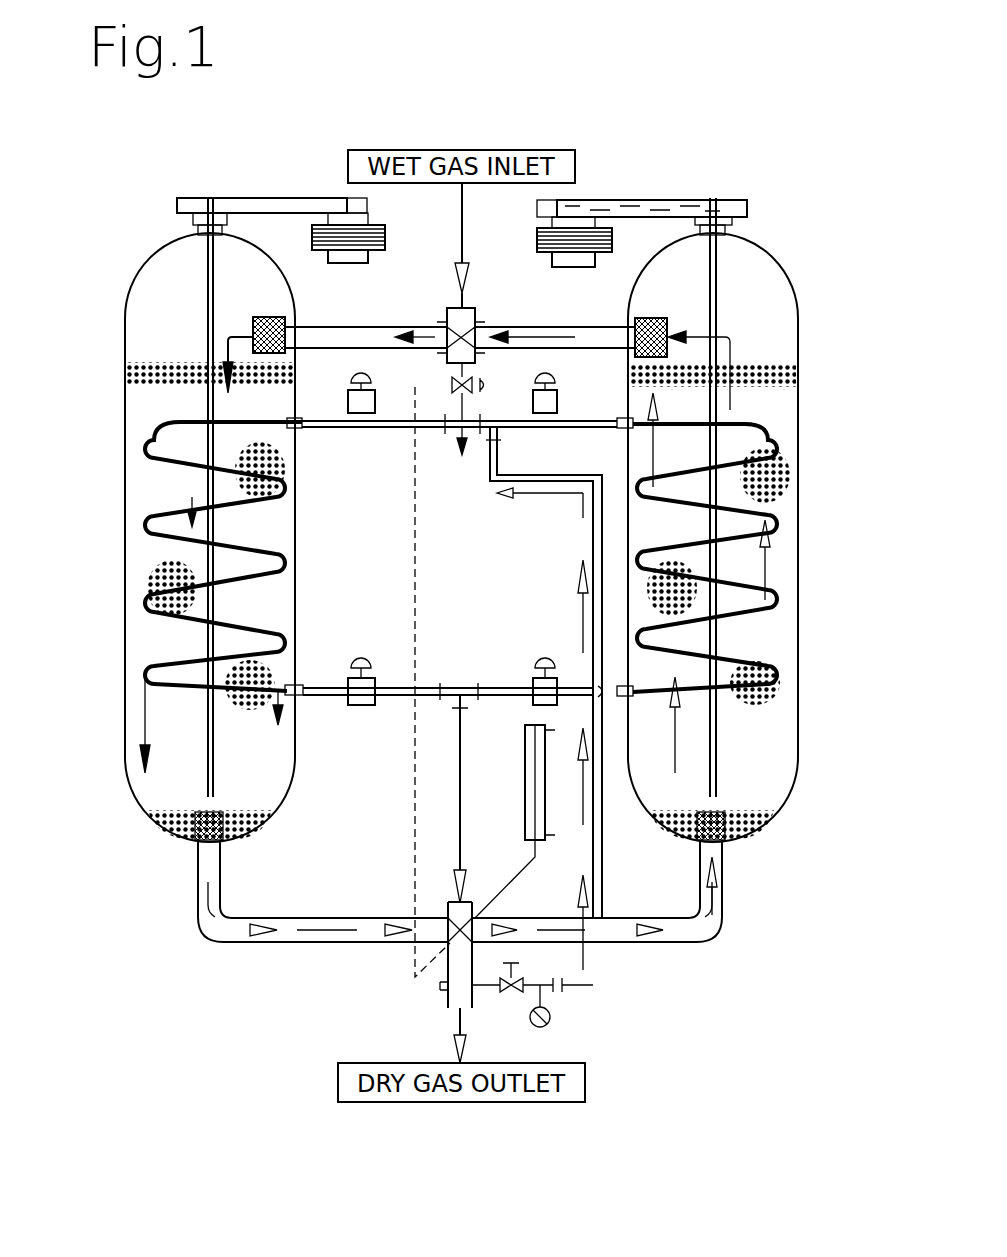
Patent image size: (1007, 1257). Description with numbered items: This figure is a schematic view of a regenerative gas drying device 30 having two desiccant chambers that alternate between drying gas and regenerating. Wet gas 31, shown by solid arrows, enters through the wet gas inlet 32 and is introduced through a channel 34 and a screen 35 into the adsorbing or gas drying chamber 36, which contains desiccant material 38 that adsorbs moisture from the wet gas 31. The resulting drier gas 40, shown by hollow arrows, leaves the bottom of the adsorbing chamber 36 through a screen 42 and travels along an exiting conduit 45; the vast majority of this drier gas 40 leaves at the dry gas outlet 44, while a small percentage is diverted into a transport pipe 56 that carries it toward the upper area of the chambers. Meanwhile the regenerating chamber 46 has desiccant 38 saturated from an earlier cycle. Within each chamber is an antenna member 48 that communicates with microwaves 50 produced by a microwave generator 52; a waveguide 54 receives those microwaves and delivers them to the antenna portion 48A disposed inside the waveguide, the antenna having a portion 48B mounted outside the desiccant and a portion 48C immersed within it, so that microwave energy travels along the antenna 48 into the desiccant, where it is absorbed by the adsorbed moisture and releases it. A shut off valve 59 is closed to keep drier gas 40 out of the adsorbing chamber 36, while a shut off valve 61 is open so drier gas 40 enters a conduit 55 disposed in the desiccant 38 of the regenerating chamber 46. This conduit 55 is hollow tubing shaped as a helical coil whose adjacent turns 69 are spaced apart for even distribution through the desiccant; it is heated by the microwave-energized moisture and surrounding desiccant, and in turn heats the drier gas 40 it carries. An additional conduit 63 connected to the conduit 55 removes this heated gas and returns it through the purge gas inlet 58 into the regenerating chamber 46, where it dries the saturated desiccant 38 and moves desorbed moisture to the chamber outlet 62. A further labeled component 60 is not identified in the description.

The regenerative gas drying device 30 is at (528, 95).
The wet gas 31 is at (208, 338).
The wet gas inlet 32 is at (467, 308).
The channel 34 is at (364, 326).
The screen 35 is at (262, 355).
The adsorbing or gas drying chamber 36 is at (125, 582).
The desiccant material 38 is at (130, 366).
The drier gas 40 is at (224, 918).
The screen 42 is at (192, 841).
The dry gas outlet 44 is at (453, 1008).
The exiting conduit 45 is at (250, 940).
The regenerating chamber 46 is at (790, 500).
The antenna member 48 is at (207, 737).
The antenna portion within waveguide 48A is at (205, 200).
The antenna portion outside desiccant 48B is at (207, 345).
The antenna portion immersed in desiccant 48C is at (208, 392).
The microwaves 50 is at (624, 205).
The microwave generator 52 is at (364, 263).
The waveguide 54 is at (290, 198).
The conduit 55 is at (228, 337).
The transport pipe 56 is at (487, 997).
The purge gas inlet 58 is at (728, 843).
The shut off valve 59 is at (367, 428).
The outlet screen 60 is at (724, 818).
The shut off valve 61 is at (553, 400).
The outlet 62 is at (640, 320).
The additional conduit 63 is at (522, 687).
The adjacent turns 69 is at (131, 508).